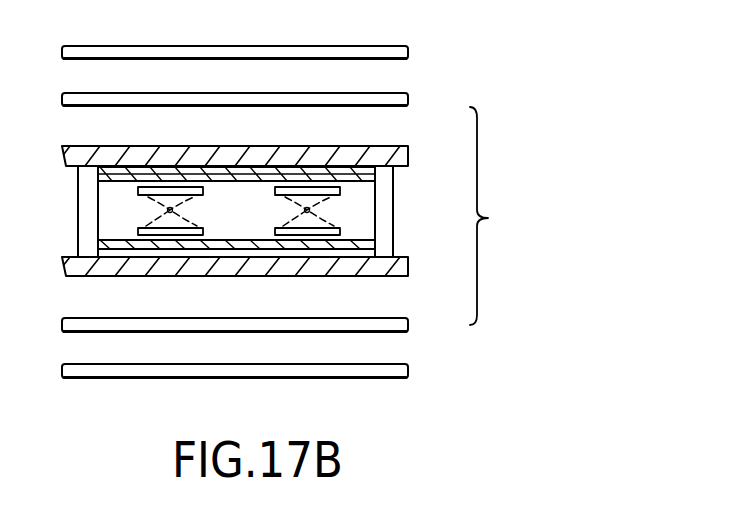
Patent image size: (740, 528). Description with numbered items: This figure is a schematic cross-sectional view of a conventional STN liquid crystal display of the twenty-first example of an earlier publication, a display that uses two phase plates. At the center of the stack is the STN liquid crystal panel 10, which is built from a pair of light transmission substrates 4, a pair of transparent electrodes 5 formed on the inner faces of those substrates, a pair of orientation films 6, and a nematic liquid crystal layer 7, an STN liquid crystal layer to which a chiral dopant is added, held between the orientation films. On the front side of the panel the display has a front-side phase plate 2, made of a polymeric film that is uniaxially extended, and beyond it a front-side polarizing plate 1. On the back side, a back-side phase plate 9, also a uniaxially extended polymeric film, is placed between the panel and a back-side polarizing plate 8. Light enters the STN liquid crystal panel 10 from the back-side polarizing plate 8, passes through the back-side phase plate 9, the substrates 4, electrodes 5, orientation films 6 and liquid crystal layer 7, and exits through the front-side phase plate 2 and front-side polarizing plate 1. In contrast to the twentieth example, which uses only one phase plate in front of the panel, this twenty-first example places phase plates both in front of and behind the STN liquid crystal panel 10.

The front-side polarizing plate 1 is at (408, 57).
The front-side phase plate 2 is at (407, 103).
The light transmission substrate 4 is at (410, 158).
The transparent electrode 5 is at (398, 176).
The orientation film 6 is at (370, 194).
The nematic liquid crystal layer 7 is at (365, 222).
The back-side polarizing plate 8 is at (408, 374).
The back-side phase plate 9 is at (408, 330).
The STN liquid crystal panel 10 is at (511, 216).